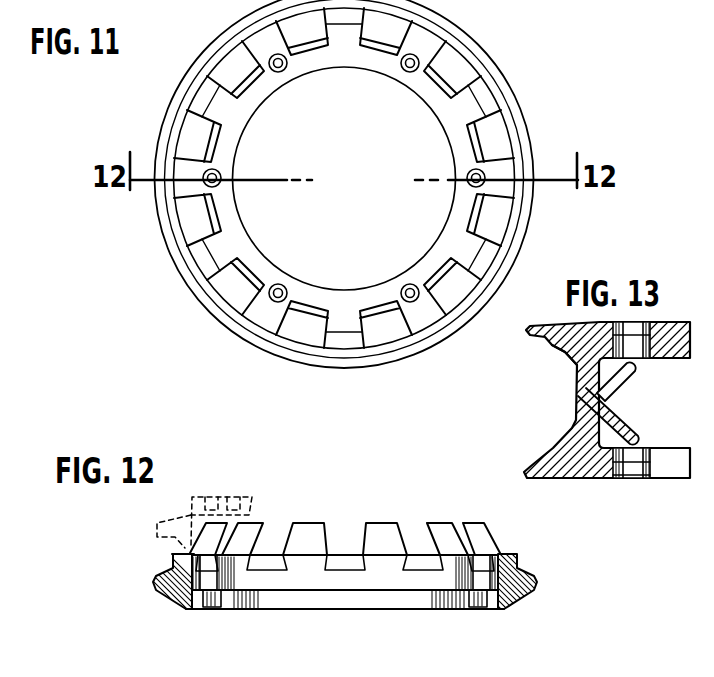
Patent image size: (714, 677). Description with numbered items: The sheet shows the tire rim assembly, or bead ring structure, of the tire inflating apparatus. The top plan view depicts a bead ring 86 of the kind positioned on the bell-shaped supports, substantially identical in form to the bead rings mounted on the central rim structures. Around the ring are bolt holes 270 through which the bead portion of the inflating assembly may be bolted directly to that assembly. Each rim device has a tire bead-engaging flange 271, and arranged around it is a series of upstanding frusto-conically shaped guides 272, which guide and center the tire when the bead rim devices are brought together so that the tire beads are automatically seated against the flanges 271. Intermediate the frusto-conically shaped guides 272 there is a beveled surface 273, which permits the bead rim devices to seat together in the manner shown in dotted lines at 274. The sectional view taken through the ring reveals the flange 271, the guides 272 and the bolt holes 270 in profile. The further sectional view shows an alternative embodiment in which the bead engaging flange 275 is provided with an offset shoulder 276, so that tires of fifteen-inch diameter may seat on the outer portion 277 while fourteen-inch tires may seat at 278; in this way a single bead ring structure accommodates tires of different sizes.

In FIG. 11, the bead ring 86 is at (415, 361).
In FIG. 12, the bead ring 86 is at (211, 626).
In FIG. 11, the bolt holes 270 is at (484, 175).
In FIG. 12, the bolt holes 270 is at (220, 607).
In FIG. 13, the bolt holes 270 is at (631, 400).
In FIG. 11, the tire bead-engaging flange 271 is at (182, 263).
In FIG. 12, the tire bead-engaging flange 271 is at (531, 583).
In FIG. 11, the frusto-conically shaped guides 272 is at (497, 222).
In FIG. 12, the frusto-conically shaped guides 272 is at (486, 535).
In FIG. 12, the beveled surface 273 is at (182, 553).
In FIG. 12, the seated bead rim devices (dotted lines) 274 is at (148, 537).
In FIG. 13, the bead engaging flange 275 is at (530, 333).
In FIG. 13, the offset shoulder 276 is at (576, 370).
In FIG. 13, the outer portion 277 is at (553, 340).
In FIG. 13, the inner seat 278 is at (577, 410).